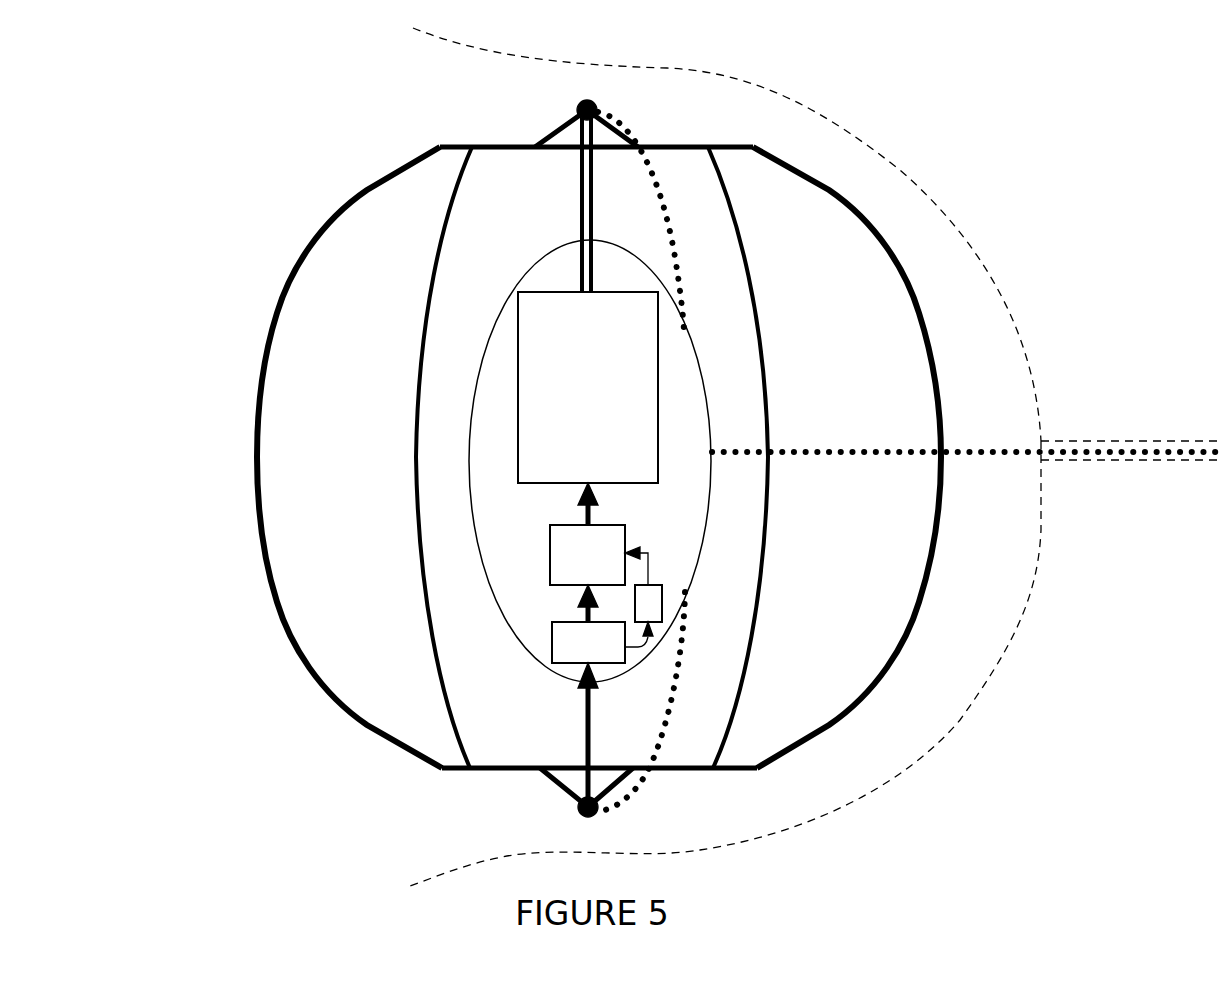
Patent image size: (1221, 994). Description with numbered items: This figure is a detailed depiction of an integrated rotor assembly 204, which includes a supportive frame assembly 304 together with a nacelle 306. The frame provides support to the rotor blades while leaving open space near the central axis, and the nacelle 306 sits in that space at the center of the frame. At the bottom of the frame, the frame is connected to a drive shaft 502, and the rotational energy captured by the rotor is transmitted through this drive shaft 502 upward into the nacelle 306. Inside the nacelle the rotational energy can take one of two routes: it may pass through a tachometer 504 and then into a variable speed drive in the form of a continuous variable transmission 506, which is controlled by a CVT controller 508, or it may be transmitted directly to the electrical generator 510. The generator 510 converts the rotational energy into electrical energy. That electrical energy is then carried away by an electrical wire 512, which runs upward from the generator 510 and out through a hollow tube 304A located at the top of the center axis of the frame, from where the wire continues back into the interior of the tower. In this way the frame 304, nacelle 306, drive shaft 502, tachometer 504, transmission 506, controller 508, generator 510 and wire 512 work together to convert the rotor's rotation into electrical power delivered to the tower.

The rotor assembly 204 is at (197, 141).
The supportive frame assembly 304 is at (263, 365).
The hollow tube in the top of the center axis of the frame 304A is at (580, 205).
The nacelle 306 is at (700, 377).
The drive shaft 502 is at (586, 728).
The tachometer 504 is at (625, 665).
The continuous variable transmission 506 is at (550, 567).
The CVT controller 508 is at (662, 605).
The electrical generator 510 is at (518, 356).
The electrical wire 512 is at (592, 227).